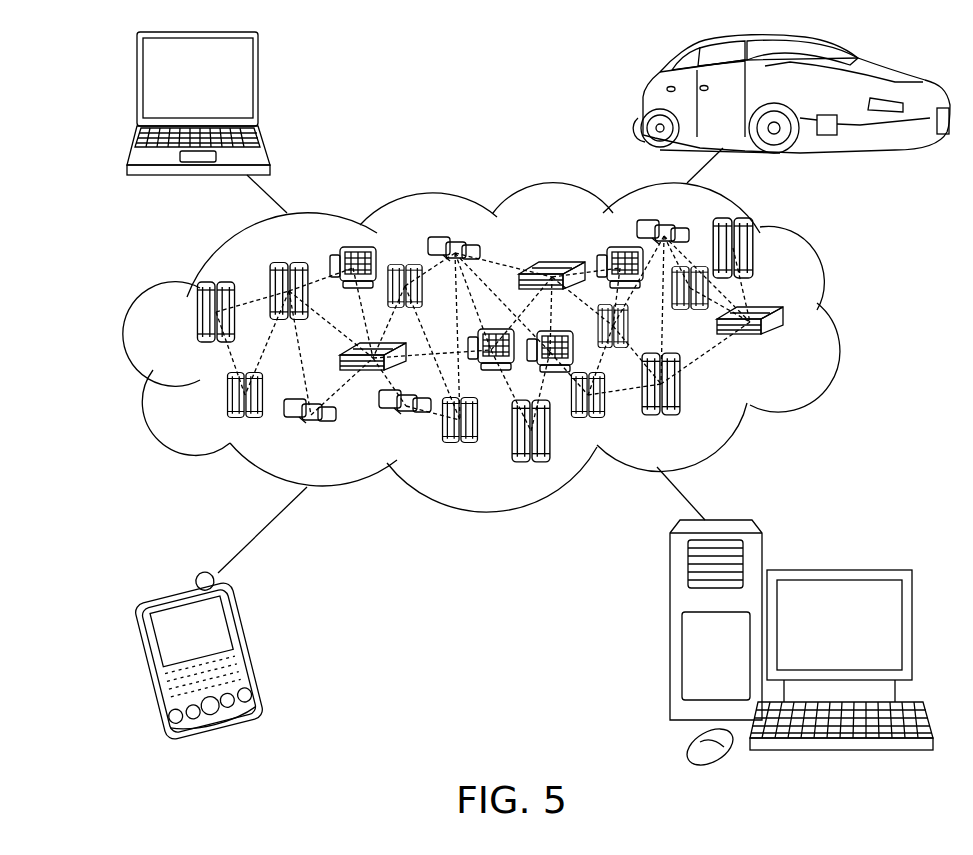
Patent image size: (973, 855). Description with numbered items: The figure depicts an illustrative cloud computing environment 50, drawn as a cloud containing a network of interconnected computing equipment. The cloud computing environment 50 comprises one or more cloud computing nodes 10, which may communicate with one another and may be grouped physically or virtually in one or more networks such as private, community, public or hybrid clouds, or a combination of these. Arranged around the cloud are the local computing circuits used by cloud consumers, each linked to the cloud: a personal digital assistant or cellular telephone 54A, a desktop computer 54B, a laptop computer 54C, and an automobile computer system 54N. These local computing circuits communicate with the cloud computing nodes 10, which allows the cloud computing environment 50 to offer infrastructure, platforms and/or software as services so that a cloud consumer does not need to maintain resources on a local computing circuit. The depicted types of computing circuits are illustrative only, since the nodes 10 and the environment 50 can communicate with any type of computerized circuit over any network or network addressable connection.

The cloud computing node 10 is at (795, 351).
The cloud computing environment 50 is at (838, 322).
The personal digital assistant or cellular telephone 54A is at (247, 655).
The desktop computer 54B is at (837, 570).
The laptop computer 54C is at (258, 83).
The automobile computer system 54N is at (643, 100).